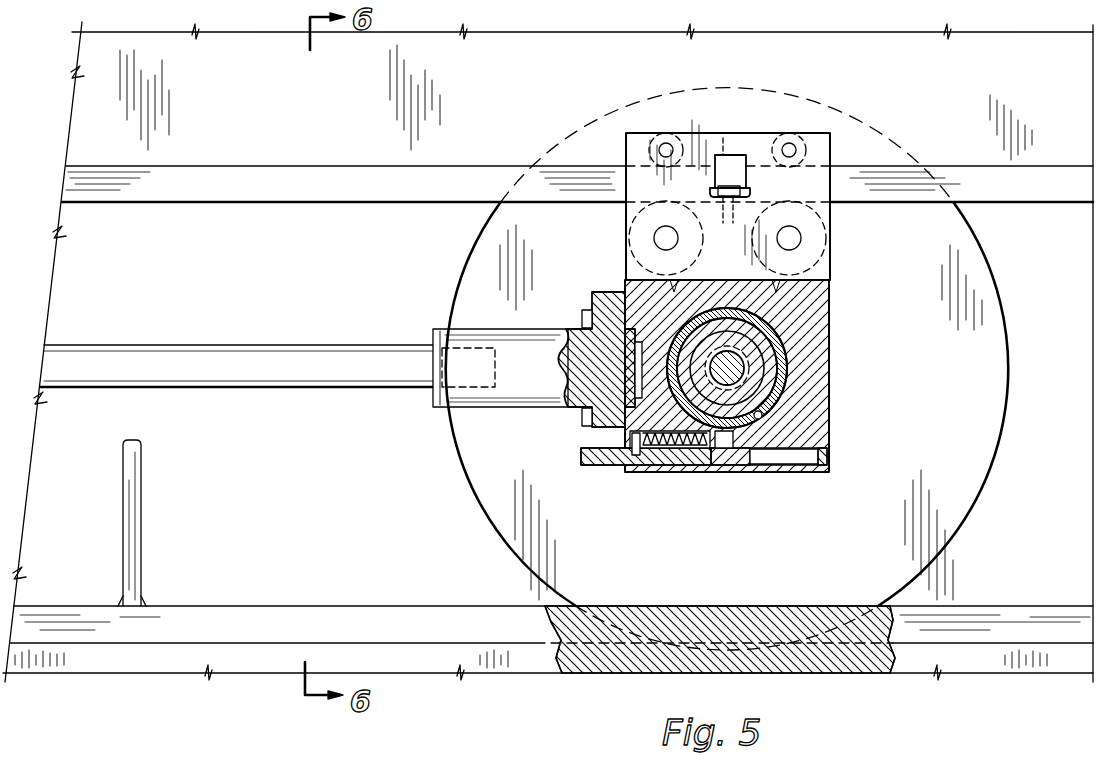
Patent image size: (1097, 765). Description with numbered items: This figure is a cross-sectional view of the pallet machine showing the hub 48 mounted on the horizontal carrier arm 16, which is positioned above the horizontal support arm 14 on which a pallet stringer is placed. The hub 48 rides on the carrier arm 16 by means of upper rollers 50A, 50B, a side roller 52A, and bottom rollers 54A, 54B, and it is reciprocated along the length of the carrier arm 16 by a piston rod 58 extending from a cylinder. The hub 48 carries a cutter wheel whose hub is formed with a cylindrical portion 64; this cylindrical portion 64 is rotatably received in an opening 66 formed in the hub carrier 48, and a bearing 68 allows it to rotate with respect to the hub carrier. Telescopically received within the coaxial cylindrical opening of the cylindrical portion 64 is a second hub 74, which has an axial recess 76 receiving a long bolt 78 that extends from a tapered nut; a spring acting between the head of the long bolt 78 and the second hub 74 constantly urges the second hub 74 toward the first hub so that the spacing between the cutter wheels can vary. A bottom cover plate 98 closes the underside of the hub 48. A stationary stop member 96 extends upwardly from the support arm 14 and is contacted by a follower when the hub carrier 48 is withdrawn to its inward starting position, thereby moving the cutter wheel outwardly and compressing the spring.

The support arm 14 is at (264, 604).
The carrier arm 16 is at (596, 31).
The hub 48 is at (818, 362).
The upper roller 50A is at (657, 137).
The upper roller 50B is at (803, 140).
The side roller 52A is at (733, 190).
The bottom roller 54A is at (632, 236).
The bottom roller 54B is at (826, 232).
The piston rod 58 is at (256, 370).
The cylindrical portion 64 is at (758, 313).
The opening 66 is at (763, 415).
The bearing 68 is at (693, 324).
The second hub 74 is at (760, 354).
The axial recess 76 is at (745, 380).
The long bolt 78 is at (746, 388).
The stop member 96 is at (132, 483).
The bottom cover plate 98 is at (707, 466).